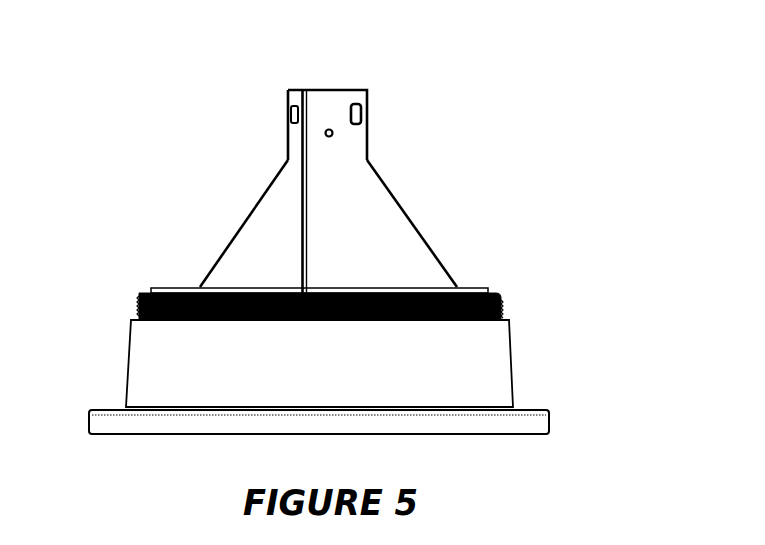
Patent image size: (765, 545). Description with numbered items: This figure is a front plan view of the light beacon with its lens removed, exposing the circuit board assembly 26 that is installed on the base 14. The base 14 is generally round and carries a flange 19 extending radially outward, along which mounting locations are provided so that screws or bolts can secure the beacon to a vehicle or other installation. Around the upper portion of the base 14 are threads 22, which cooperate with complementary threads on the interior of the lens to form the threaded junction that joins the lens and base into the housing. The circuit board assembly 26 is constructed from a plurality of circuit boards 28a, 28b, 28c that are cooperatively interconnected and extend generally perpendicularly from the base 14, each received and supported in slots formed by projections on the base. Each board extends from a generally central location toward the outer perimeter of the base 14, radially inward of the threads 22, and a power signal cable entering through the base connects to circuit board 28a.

The circuit board assembly 26 is at (196, 164).
The circuit board 28a is at (305, 175).
The circuit board 28b is at (405, 212).
The circuit board 28c is at (233, 242).
The threads 22 is at (493, 305).
The base 14 is at (512, 350).
The flange 19 is at (549, 420).